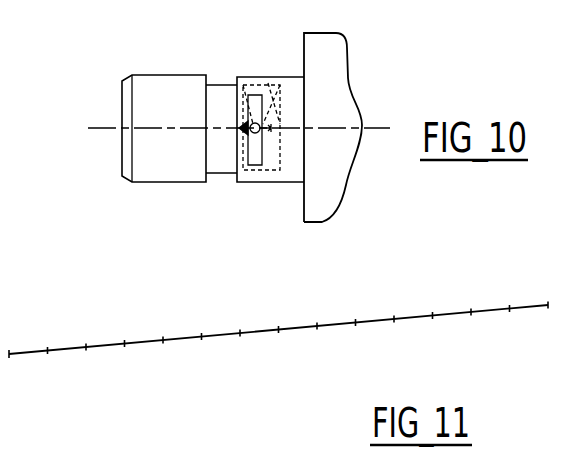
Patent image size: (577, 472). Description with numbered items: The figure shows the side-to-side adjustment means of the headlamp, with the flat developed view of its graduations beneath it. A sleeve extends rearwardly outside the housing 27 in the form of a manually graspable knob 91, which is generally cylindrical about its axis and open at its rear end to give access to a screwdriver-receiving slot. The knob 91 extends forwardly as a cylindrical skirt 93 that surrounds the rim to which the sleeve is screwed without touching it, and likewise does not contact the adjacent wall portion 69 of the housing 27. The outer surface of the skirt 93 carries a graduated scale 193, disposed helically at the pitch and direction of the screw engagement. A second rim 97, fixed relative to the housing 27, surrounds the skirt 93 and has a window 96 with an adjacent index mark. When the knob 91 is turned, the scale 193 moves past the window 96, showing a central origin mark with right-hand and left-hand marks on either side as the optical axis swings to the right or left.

In FIG. 10, the knob 91 is at (160, 155).
In FIG. 10, the cylindrical skirt 93 is at (222, 97).
In FIG. 10, the second rim 97 is at (263, 78).
In FIG. 10, the window 96 is at (250, 168).
In FIG. 10, the graduated scale 193 is at (223, 150).
In FIG. 11, the graduated scale 193 is at (347, 324).
In FIG. 10, the wall portion of the housing 69 is at (303, 213).
In FIG. 10, the housing 27 is at (325, 190).